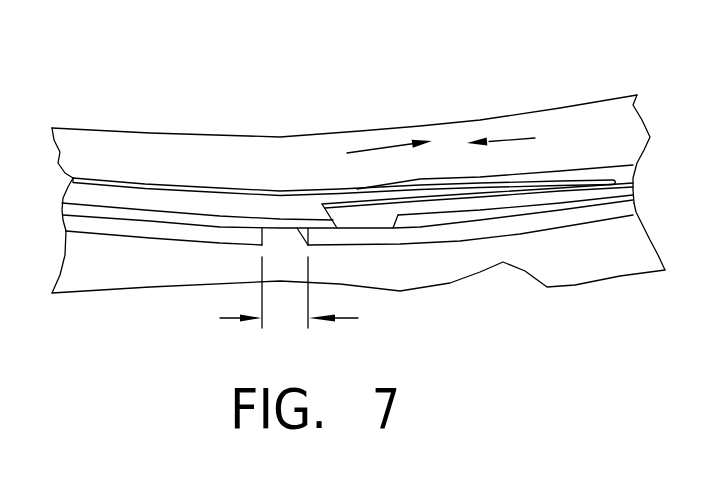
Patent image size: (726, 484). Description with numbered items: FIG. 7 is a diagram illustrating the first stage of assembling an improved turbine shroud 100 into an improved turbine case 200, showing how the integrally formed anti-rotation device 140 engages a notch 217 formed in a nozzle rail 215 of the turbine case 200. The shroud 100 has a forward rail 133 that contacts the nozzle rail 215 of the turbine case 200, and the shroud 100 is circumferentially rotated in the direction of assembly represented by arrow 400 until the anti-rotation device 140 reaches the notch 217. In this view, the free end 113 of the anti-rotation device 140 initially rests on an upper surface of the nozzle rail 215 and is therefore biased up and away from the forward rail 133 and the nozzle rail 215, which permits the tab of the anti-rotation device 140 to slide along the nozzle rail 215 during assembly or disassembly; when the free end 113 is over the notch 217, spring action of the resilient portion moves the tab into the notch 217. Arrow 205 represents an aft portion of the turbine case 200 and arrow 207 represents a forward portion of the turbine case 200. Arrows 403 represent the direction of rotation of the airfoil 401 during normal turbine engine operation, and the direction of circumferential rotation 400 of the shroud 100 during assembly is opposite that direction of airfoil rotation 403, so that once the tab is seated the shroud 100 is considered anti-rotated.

The turbine shroud 100 is at (127, 179).
The free end 113 is at (393, 248).
The forward rail 133 is at (175, 200).
The anti-rotation device 140 is at (393, 248).
The turbine case 200 is at (192, 276).
The aft portion arrow 205 is at (537, 113).
The forward portion arrow 207 is at (589, 246).
The nozzle rail 215 is at (249, 250).
The notch 217 is at (340, 319).
The direction of circumferential rotation arrow 400 is at (517, 140).
The airfoil 401 is at (174, 111).
The direction of airfoil rotation arrow 403 is at (359, 138).